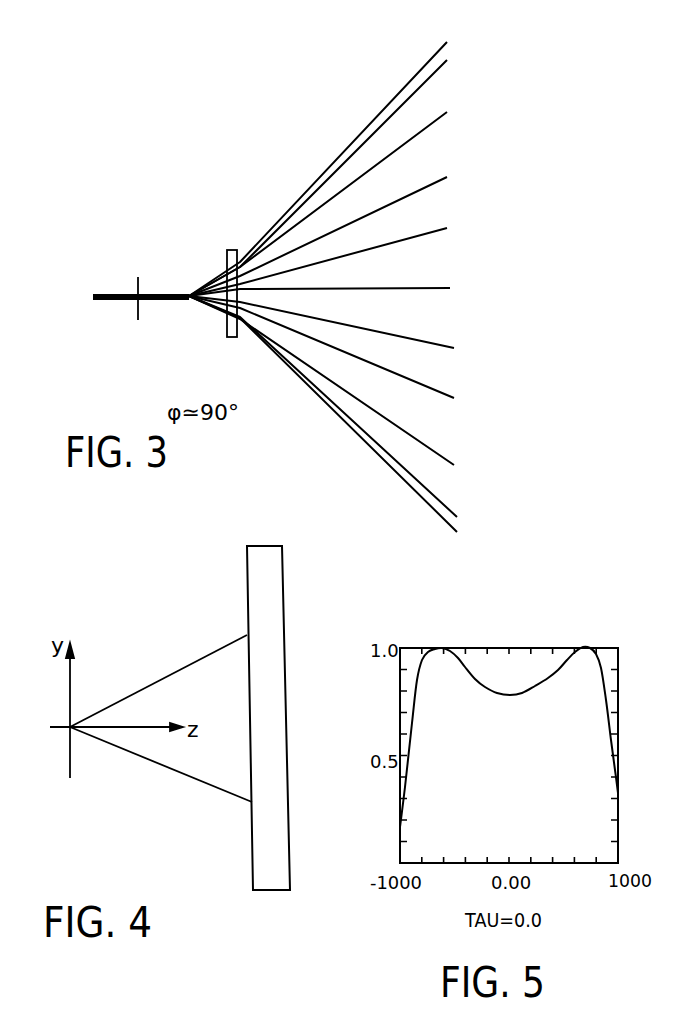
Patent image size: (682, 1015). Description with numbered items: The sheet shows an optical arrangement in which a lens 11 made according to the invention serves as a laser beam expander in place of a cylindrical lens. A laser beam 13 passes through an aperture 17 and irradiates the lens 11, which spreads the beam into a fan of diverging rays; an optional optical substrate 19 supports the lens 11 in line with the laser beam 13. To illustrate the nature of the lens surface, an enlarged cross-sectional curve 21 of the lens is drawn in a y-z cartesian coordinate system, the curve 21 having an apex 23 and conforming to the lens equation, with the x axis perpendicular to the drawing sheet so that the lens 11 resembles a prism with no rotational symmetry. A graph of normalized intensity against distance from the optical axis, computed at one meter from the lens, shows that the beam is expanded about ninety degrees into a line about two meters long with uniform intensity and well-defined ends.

In FIG. 3, the lens 11 is at (207, 304).
In FIG. 3, the laser beam 13 is at (95, 302).
In FIG. 3, the aperture 17 is at (138, 277).
In FIG. 3, the optical substrate 19 is at (232, 250).
In FIG. 4, the cross-sectional curve 21 is at (174, 771).
In FIG. 4, the apex 23 is at (70, 730).